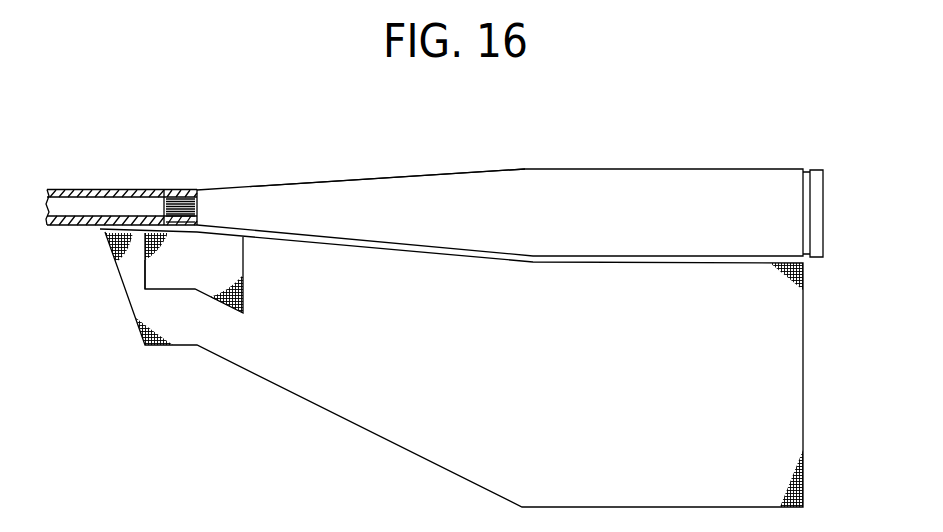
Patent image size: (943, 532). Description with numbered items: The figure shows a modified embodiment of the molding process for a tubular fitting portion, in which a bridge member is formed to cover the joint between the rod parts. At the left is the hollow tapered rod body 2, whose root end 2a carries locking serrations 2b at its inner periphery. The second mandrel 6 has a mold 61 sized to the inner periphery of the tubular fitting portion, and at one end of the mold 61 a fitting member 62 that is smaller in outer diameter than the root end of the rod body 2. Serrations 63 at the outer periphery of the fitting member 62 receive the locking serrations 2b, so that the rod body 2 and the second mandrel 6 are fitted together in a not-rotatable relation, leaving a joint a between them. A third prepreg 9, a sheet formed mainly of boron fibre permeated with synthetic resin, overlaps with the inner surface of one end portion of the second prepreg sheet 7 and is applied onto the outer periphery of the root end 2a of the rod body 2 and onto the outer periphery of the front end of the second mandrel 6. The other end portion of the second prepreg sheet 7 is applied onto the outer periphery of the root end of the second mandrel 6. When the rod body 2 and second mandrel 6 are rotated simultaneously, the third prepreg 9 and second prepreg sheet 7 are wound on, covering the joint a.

The rod body 2 is at (63, 189).
The locking serrations 2b is at (166, 194).
The root end 2a is at (180, 197).
The fitting member 62 is at (188, 199).
The joint a is at (196, 199).
The second mandrel 6 is at (378, 178).
The mold 61 is at (320, 182).
The second prepreg sheet 7 is at (390, 432).
The serrations 63 is at (178, 225).
The third prepreg 9 is at (152, 278).